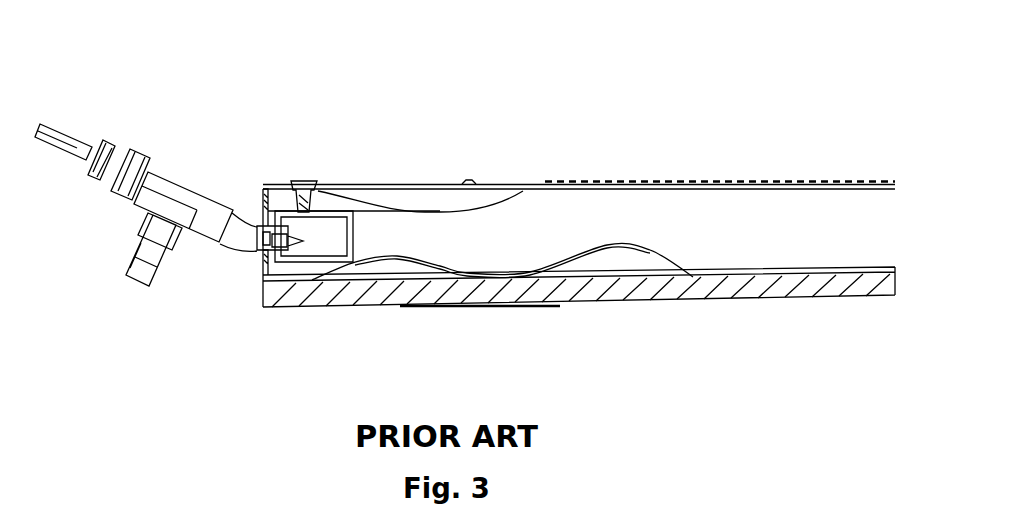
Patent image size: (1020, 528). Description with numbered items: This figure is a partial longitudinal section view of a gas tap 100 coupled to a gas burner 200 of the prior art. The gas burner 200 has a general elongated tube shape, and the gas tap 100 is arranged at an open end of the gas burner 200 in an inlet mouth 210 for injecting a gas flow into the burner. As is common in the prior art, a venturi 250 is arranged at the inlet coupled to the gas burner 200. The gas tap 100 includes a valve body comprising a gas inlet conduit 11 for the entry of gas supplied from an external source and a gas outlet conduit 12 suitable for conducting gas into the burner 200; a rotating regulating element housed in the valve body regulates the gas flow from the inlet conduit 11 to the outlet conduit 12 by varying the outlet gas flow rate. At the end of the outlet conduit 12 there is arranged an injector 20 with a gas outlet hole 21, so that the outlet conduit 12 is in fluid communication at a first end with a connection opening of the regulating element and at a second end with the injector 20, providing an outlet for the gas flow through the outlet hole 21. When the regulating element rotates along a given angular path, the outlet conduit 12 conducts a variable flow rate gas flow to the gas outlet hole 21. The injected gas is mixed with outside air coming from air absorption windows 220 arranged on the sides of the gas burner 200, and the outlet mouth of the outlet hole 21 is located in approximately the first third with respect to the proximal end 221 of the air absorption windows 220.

The gas tap 100 is at (174, 92).
The gas inlet conduit 11 is at (120, 253).
The gas outlet conduit 12 is at (222, 202).
The gas burner 200 is at (526, 134).
The inlet mouth 210 is at (265, 196).
The air absorption windows 220 is at (335, 245).
The proximal end 221 is at (268, 262).
The venturi 250 is at (438, 213).
The injector 20 is at (305, 205).
The gas outlet hole 21 is at (287, 207).